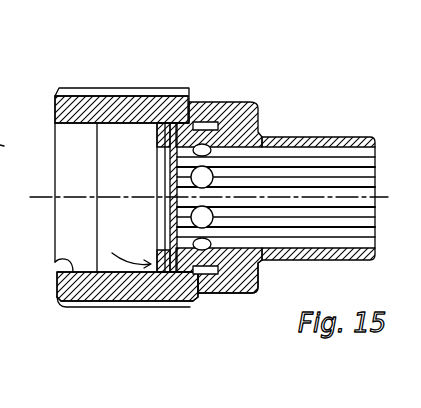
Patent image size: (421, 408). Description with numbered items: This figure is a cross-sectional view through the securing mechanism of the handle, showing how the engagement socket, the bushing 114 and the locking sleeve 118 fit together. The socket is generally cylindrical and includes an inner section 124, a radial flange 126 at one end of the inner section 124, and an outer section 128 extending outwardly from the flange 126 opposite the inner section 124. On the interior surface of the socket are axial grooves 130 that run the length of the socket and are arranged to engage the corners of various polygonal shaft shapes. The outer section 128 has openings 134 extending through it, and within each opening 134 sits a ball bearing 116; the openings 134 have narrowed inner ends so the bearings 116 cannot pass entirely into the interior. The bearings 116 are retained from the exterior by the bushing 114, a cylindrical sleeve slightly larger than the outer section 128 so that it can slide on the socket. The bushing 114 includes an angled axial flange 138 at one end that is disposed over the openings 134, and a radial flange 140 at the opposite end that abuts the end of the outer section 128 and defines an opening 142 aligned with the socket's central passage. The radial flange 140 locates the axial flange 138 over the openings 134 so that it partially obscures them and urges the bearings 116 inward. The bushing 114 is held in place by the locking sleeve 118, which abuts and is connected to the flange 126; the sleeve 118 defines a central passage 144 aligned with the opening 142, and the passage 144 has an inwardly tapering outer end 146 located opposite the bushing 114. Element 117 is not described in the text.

The bushing 114 is at (130, 249).
The ball bearings 116 is at (3, 144).
The nipple 117 is at (335, 132).
The locking sleeve 118 is at (97, 308).
The inner section 124 is at (287, 137).
The radial flange 126 is at (247, 293).
The outer section 128 is at (200, 264).
The axial grooves 130 is at (362, 175).
The openings 134 is at (204, 214).
The axial flange 138 is at (190, 120).
The radial flange 140 is at (152, 150).
The opening 142 is at (158, 170).
The central passage 144 is at (117, 124).
The inwardly tapering outer end 146 is at (60, 262).